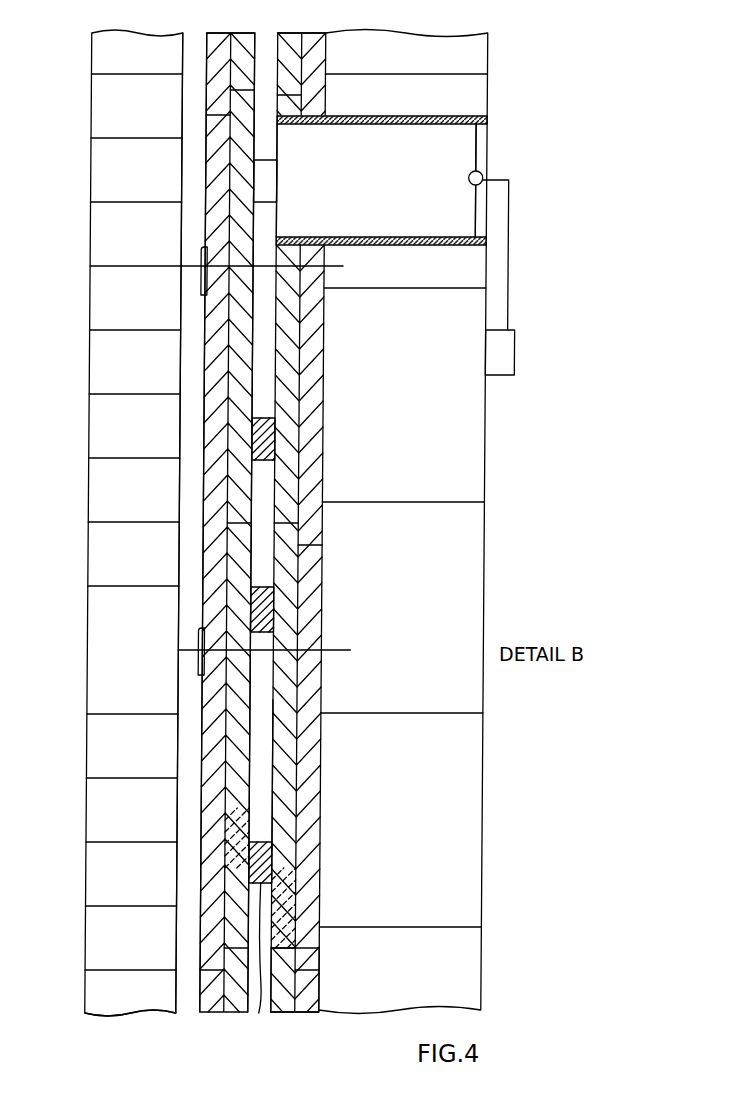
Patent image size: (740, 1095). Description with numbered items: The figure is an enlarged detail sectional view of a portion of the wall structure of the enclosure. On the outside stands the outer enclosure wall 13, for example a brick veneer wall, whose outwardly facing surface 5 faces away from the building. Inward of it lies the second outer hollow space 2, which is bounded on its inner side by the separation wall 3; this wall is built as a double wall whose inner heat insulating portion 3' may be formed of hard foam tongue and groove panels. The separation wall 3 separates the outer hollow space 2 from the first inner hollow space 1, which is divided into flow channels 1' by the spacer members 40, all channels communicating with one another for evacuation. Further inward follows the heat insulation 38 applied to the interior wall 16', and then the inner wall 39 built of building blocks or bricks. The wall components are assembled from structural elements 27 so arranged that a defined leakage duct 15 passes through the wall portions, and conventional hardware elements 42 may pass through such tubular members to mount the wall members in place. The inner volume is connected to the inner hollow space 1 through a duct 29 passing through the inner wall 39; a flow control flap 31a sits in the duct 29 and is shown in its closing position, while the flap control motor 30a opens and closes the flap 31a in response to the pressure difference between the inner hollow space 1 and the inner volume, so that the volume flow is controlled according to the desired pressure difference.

The first inner hollow space 1 is at (264, 522).
The flow channels 1' is at (313, 775).
The second outer hollow space 2 is at (205, 109).
The separation wall 3 is at (210, 545).
The inner heat insulating portion 3' is at (242, 925).
The outwardly facing surface 5 is at (92, 358).
The outer enclosure wall 13 is at (121, 1003).
The leakage duct 15 is at (203, 652).
The interior wall 16' is at (323, 522).
The structural elements 27 is at (308, 32).
The duct 29 is at (490, 119).
The flap control motor 30a is at (517, 360).
The flow control flap 31a is at (484, 162).
The heat insulation 38 is at (289, 995).
The inner wall 39 is at (468, 45).
The spacer members 40 is at (266, 1013).
The hardware elements 42 is at (150, 262).